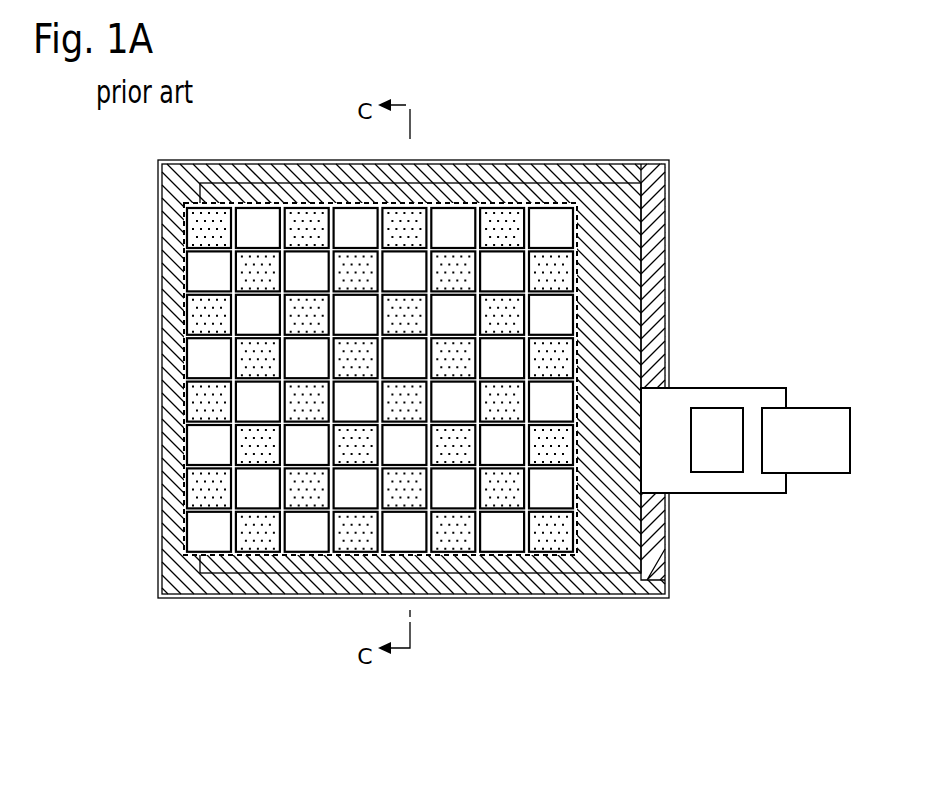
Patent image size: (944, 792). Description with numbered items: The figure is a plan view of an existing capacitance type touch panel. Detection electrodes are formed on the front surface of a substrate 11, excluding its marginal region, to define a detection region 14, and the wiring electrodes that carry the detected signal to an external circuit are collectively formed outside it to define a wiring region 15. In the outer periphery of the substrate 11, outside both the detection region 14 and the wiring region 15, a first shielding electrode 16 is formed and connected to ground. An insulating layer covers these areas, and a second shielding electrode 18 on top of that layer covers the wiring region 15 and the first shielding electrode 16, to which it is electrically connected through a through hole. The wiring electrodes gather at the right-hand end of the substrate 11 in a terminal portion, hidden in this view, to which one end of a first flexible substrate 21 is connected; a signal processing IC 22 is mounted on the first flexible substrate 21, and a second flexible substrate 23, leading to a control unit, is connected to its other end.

The substrate 11 is at (669, 583).
The detection region 14 is at (350, 212).
The wiring region 15 is at (462, 185).
The first shielding electrode 16 is at (669, 185).
The second shielding electrode 18 is at (571, 183).
The first flexible substrate 21 is at (722, 493).
The signal processing IC 22 is at (718, 408).
The second flexible substrate 23 is at (810, 408).